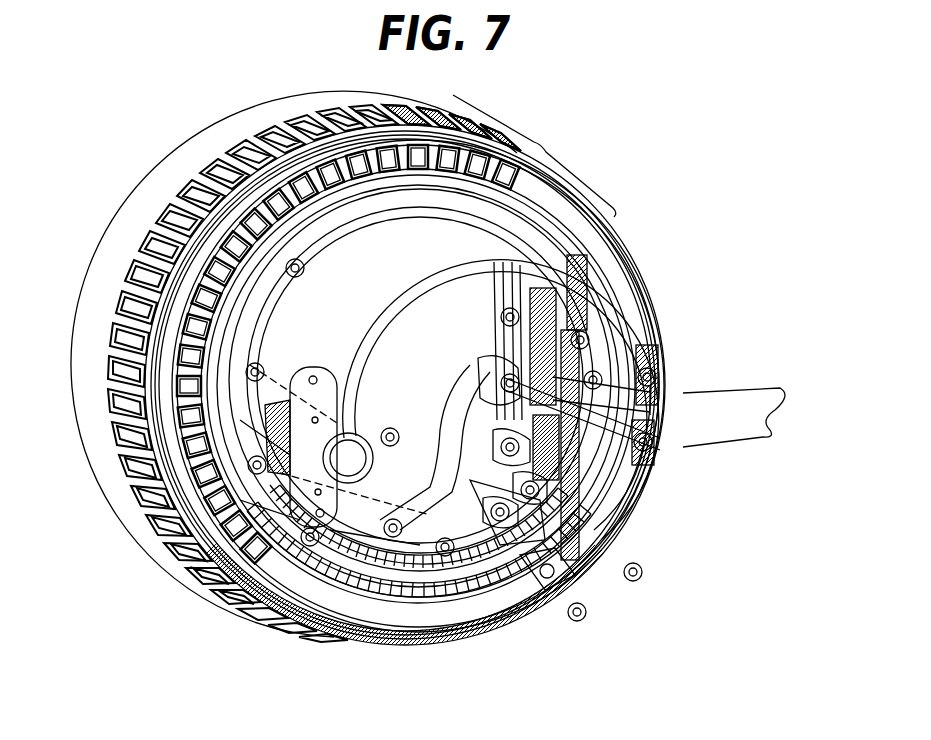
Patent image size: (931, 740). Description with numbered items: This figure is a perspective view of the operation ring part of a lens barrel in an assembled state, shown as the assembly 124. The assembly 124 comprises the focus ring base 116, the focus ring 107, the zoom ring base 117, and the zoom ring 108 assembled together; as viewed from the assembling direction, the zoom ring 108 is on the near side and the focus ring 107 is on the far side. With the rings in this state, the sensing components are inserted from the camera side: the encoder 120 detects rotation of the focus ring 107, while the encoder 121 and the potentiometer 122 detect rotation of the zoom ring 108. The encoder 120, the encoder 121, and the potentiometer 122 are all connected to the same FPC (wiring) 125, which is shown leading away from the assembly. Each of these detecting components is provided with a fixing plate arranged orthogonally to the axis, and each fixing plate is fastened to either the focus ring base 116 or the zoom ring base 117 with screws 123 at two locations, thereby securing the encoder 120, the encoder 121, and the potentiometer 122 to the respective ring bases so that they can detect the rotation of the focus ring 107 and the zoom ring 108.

The focus ring 107 is at (130, 335).
The zoom ring 108 is at (197, 490).
The focus ring base 116 is at (490, 290).
The zoom ring base 117 is at (433, 563).
The encoder 120 is at (545, 362).
The encoder 121 is at (553, 567).
The potentiometer 122 is at (313, 444).
The screws 123 is at (397, 432).
The assembly 124 is at (534, 156).
The FPC (wiring) 125 is at (782, 392).